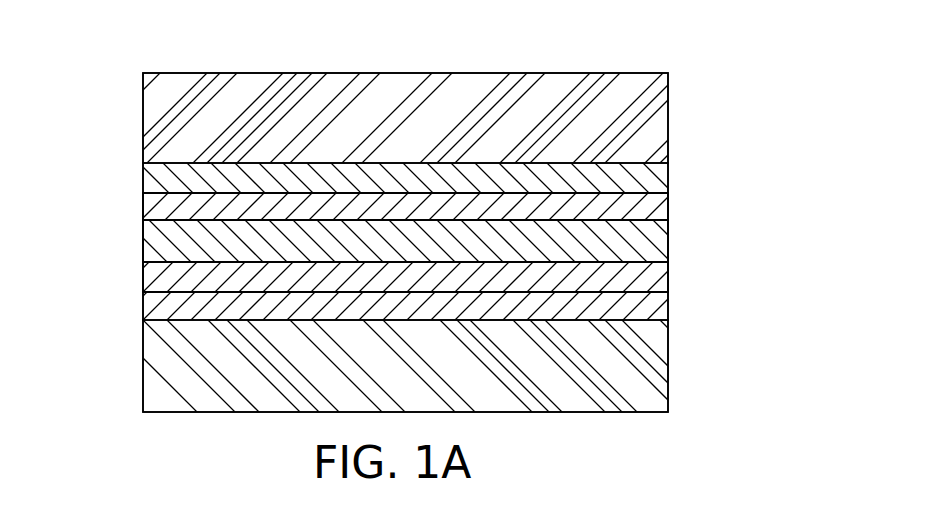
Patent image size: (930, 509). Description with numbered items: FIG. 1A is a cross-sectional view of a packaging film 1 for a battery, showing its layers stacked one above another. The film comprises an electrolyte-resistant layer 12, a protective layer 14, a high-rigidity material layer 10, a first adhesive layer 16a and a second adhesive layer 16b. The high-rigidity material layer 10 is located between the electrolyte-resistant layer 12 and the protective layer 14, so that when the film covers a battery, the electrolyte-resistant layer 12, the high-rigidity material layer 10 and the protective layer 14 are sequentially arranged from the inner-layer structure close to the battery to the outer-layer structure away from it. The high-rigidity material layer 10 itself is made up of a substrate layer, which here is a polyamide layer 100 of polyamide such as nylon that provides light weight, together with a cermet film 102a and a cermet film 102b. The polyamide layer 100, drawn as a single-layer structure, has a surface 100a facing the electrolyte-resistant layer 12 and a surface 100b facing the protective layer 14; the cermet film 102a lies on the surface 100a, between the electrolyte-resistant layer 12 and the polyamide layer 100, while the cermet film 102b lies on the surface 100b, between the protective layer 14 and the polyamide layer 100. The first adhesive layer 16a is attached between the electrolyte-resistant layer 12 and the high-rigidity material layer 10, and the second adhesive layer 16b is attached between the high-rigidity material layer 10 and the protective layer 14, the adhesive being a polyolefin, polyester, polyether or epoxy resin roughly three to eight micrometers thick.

The packaging film 1 is at (60, 33).
The high-rigidity material layer 10 is at (762, 197).
The electrolyte-resistant layer 12 is at (669, 368).
The protective layer 14 is at (669, 117).
The first adhesive layer 16a is at (669, 305).
The second adhesive layer 16b is at (669, 178).
The polyamide layer 100 is at (669, 243).
The surface 100a is at (165, 262).
The surface 100b is at (160, 220).
The cermet film 102a is at (669, 276).
The cermet film 102b is at (669, 208).